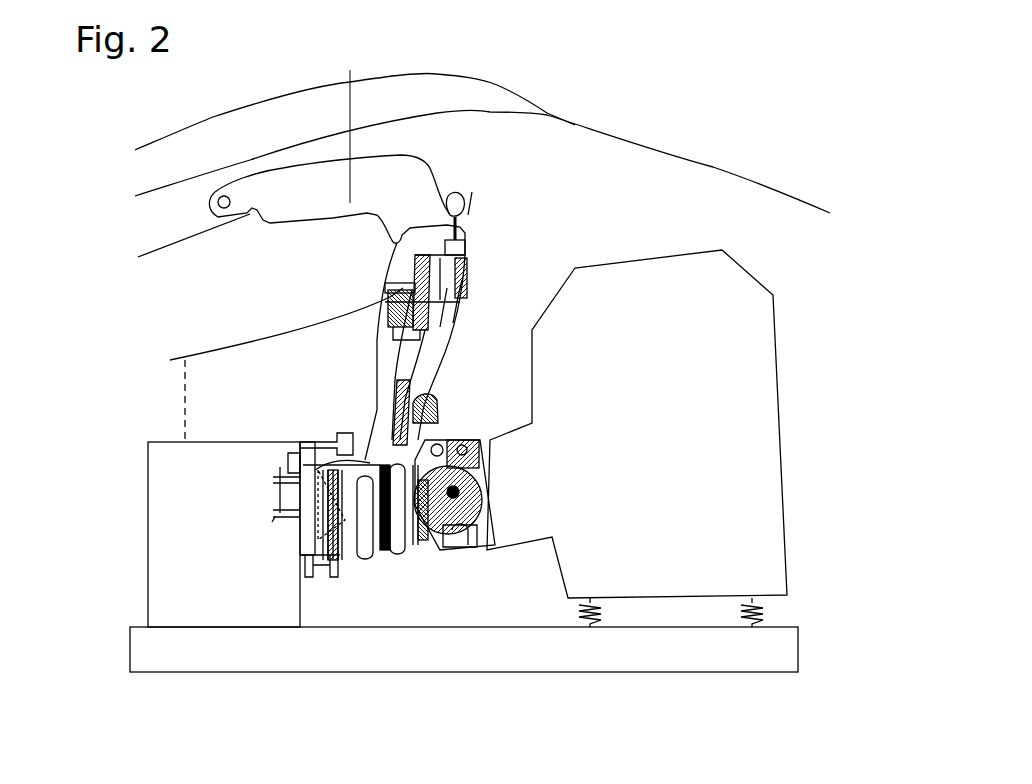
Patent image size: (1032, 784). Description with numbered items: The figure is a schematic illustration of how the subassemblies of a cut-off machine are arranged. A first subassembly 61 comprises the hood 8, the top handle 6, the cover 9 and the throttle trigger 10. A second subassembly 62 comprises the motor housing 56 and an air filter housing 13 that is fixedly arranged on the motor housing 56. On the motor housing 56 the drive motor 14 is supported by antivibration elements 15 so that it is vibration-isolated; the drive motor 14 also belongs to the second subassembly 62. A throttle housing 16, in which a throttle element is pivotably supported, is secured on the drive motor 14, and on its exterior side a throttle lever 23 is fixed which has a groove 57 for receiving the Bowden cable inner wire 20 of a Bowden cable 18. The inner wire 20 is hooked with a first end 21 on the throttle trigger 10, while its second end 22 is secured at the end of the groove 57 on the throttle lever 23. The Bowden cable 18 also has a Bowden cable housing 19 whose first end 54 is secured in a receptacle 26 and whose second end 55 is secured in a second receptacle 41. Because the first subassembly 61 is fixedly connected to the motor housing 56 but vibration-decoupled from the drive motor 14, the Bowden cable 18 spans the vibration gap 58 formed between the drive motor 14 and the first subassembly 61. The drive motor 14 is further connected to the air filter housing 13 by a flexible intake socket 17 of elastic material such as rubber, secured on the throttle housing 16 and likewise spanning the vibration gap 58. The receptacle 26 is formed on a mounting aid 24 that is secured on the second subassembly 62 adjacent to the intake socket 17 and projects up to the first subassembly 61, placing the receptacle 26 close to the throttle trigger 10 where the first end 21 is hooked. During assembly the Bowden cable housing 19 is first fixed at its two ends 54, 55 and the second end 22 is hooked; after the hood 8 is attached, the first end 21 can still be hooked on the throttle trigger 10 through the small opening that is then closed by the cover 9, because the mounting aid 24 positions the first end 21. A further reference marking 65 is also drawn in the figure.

The top handle 6 is at (172, 202).
The hood 8 is at (782, 193).
The cover 9 is at (220, 132).
The throttle trigger 10 is at (352, 126).
The air filter housing 13 is at (202, 608).
The drive motor 14 is at (742, 400).
The antivibration elements 15 is at (750, 618).
The throttle housing 16 is at (470, 520).
The intake socket 17 is at (399, 545).
The Bowden cable 18 is at (385, 301).
The Bowden cable housing 19 is at (420, 405).
The Bowden cable inner wire 20 is at (430, 548).
The first end 21 is at (456, 200).
The second end 22 is at (460, 548).
The throttle lever 23 is at (470, 515).
The mounting aid 24 is at (378, 377).
The receptacle 26 is at (460, 247).
The second receptacle 41 is at (430, 423).
The first end 54 is at (470, 286).
The second end 55 is at (421, 384).
The motor housing 56 is at (315, 650).
The groove 57 is at (441, 548).
The vibration gap 58 is at (365, 605).
The first subassembly 61 is at (554, 90).
The second subassembly 62 is at (242, 688).
The reference line 65 is at (182, 407).